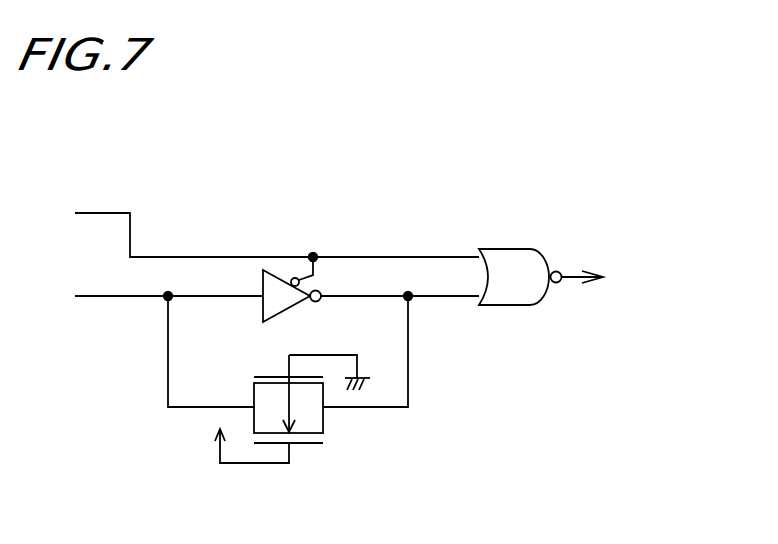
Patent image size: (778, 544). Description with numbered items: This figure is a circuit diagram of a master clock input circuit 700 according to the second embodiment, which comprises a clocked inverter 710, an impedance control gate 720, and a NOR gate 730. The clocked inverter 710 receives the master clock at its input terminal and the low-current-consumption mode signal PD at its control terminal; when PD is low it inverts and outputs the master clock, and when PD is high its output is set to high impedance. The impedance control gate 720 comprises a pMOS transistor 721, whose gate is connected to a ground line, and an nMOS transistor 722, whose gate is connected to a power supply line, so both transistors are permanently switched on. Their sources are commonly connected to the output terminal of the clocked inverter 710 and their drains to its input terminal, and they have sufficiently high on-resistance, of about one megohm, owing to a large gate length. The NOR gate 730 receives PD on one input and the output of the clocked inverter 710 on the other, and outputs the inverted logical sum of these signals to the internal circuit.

The master clock input circuit 700 is at (633, 130).
The clocked inverter 710 is at (284, 277).
The impedance control gate 720 is at (408, 447).
The pMOS transistor 721 is at (324, 393).
The nMOS transistor 722 is at (324, 430).
The NOR gate 730 is at (511, 248).